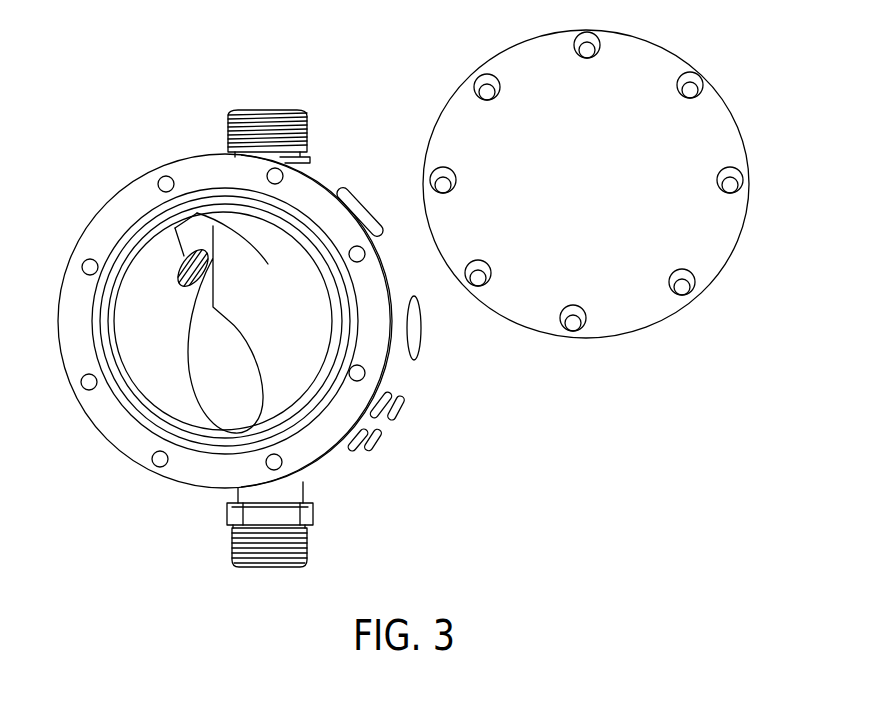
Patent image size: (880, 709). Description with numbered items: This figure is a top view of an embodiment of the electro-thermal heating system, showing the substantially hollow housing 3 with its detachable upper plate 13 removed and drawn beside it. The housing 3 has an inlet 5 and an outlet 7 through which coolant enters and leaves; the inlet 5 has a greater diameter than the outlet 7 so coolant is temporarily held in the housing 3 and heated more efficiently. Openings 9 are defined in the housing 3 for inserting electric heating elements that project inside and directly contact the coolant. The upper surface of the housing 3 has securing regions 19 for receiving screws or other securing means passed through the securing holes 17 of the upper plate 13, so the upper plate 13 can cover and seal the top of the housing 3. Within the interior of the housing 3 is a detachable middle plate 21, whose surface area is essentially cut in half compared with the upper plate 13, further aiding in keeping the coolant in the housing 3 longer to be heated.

The housing 3 is at (147, 343).
The inlet 5 is at (232, 548).
The outlet 7 is at (301, 130).
The openings 9 is at (185, 267).
The upper plate 13 is at (578, 185).
The securing holes 17 is at (732, 186).
The securing regions 19 is at (282, 462).
The middle plate 21 is at (197, 214).